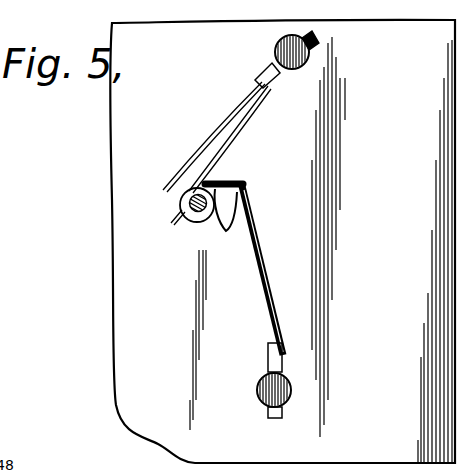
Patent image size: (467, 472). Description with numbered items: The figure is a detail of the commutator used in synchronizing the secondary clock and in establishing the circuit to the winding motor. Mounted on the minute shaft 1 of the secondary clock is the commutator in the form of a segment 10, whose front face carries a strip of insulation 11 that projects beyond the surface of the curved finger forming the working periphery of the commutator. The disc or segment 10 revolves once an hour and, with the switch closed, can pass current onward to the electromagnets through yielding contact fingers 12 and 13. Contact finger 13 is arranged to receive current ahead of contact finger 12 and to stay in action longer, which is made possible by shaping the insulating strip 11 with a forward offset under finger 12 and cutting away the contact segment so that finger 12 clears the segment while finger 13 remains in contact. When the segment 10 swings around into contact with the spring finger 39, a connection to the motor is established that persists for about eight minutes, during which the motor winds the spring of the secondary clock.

The minute shaft 1 is at (190, 217).
The segment 10 is at (205, 222).
The strip of insulation 11 is at (220, 183).
The yielding contact finger 12 is at (258, 228).
The yielding contact finger 13 is at (250, 224).
The spring finger 39 is at (180, 168).